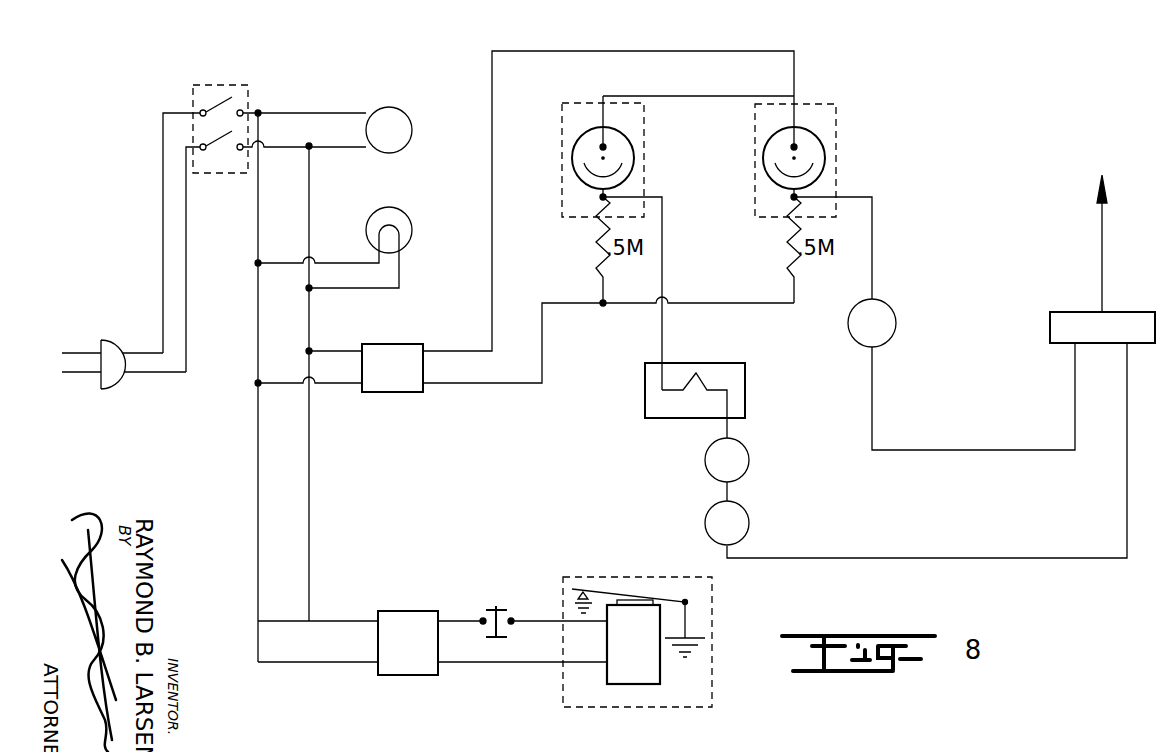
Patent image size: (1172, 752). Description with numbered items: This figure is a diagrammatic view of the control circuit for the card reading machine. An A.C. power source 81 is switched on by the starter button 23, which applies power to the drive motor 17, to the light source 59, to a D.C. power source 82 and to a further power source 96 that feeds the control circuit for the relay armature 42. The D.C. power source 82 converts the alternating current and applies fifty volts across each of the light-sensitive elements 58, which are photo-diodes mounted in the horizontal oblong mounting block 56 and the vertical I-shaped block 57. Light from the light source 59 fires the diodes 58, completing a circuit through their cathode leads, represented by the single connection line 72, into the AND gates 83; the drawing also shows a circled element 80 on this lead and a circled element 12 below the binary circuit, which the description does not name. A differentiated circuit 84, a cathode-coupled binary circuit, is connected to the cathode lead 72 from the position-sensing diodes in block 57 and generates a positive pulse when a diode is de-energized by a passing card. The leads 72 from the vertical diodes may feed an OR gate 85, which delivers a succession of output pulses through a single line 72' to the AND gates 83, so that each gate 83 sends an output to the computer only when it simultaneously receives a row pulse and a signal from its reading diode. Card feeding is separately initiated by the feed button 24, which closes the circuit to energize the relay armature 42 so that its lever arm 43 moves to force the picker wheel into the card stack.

The starter button 23 is at (232, 85).
The drive motor 17 is at (395, 107).
The light source 59 is at (405, 208).
The A.C. power source 81 is at (110, 340).
The power source 82 is at (404, 344).
The vertical I-shaped block 57 is at (569, 102).
The horizontal oblong mounting block 56 is at (832, 105).
The light-sensitive elements 58 is at (577, 140).
The cathode lead 72 is at (764, 318).
The single line 72' is at (927, 450).
The amplifier 80 is at (961, 374).
The AND gates 83 is at (1075, 312).
The differentiated circuit 84 is at (740, 363).
The counter 12 is at (727, 469).
The OR gate 85 is at (750, 517).
The power source 96 is at (415, 611).
The feed button 24 is at (503, 607).
The lever arm 43 is at (607, 592).
The high speed relay armature 42 is at (660, 672).